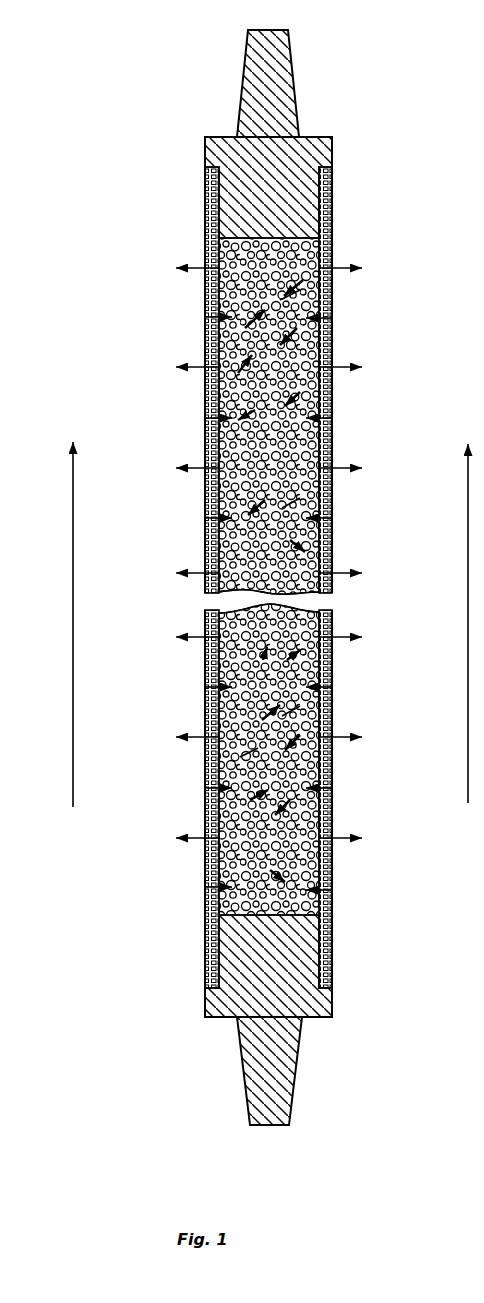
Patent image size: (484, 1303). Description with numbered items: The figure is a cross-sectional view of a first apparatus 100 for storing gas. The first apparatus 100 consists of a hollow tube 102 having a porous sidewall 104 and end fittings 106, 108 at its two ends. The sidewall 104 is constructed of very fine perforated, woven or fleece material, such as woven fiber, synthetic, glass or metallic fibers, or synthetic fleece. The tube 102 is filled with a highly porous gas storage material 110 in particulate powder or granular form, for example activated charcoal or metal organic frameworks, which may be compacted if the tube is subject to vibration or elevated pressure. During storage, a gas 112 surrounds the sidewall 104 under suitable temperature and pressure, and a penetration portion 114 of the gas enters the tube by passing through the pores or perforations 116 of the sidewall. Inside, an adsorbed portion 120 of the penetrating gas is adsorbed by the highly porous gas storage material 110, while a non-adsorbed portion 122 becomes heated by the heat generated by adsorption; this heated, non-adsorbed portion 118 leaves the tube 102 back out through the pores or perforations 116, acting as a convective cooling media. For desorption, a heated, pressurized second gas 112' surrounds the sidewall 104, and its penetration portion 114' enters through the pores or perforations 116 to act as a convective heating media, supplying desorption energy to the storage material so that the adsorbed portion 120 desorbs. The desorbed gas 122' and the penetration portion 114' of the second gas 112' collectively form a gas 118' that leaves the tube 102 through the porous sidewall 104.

The first apparatus 100 is at (180, 86).
The hollow tube 102 is at (219, 290).
The sidewall 104 is at (205, 187).
The end fitting 106 is at (296, 92).
The end fitting 108 is at (245, 1087).
The highly porous gas storage material 110 is at (333, 913).
The gas 112 is at (270, 624).
The second gas 112' is at (270, 624).
The penetration portion 114 is at (259, 612).
The penetration portion of the second gas 114' is at (259, 612).
The pores or perforations 116 is at (333, 352).
The heated non-adsorbed portion 118 is at (263, 529).
The gas leaving the tube 118' is at (263, 529).
The adsorbed portion 120 is at (251, 581).
The non-adsorbed portion 122 is at (270, 516).
The desorbed gas 122' is at (270, 516).